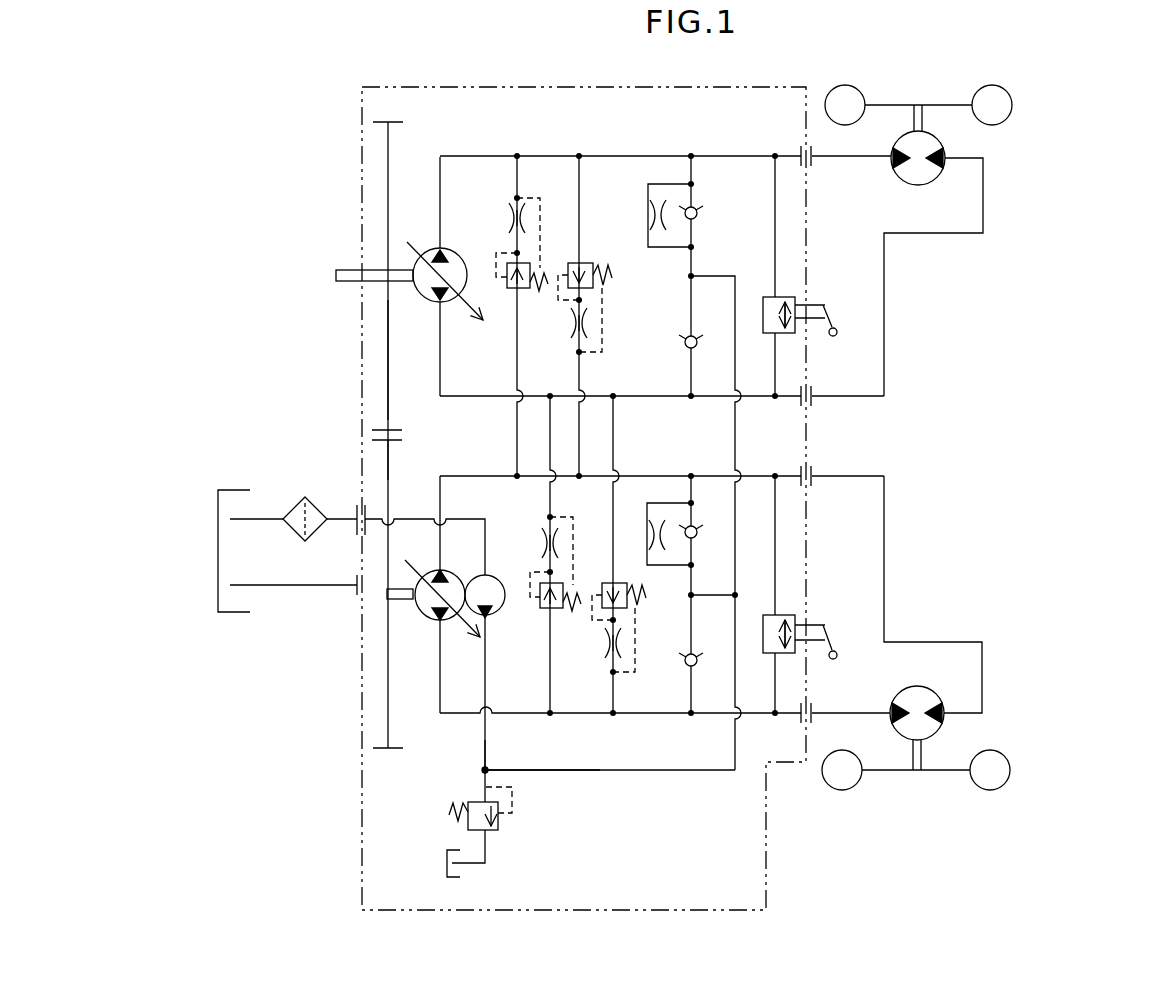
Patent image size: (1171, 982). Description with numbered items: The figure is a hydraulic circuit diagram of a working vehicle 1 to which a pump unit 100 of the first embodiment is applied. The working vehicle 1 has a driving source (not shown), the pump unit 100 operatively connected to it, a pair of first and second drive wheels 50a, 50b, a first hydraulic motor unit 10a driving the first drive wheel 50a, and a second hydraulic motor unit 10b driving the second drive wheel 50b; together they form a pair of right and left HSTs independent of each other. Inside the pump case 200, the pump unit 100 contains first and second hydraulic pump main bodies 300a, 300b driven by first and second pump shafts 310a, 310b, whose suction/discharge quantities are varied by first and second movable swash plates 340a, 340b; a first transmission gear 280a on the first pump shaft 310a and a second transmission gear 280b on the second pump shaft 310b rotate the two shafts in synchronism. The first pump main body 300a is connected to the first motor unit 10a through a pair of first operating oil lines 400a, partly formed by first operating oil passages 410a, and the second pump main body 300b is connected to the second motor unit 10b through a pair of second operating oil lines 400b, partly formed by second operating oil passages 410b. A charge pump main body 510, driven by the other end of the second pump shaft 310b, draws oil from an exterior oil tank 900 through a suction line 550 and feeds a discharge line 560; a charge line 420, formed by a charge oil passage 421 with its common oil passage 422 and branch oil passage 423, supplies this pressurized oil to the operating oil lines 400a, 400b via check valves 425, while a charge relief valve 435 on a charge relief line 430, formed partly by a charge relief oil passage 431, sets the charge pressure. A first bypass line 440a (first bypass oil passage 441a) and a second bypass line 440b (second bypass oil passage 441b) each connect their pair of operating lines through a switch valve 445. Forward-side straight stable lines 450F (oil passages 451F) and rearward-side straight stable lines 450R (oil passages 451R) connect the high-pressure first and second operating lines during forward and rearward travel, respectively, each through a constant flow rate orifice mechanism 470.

The working vehicle 1 is at (1090, 263).
The pump unit 100 is at (290, 195).
The pump case 200 is at (362, 146).
The first transmission gear 280a is at (388, 327).
The second transmission gear 280b is at (388, 460).
The first hydraulic pump main body 300a is at (402, 254).
The second hydraulic pump main body 300b is at (434, 623).
The first pump shaft 310a is at (353, 272).
The second pump shaft 310b is at (400, 600).
The first movable swash plate 340a is at (465, 303).
The second movable swash plate 340b is at (407, 560).
The exterior oil tank 900 is at (222, 500).
The suction line 550 is at (487, 548).
The charge pump main body 510 is at (502, 620).
The discharge line 560 is at (484, 750).
The charge relief valve 435 is at (503, 830).
The charge relief line 430 is at (524, 866).
The charge relief oil passage 431 is at (487, 847).
The constant flow rate orifice mechanism 470 is at (497, 238).
The forward-side straight stable lines 450F is at (587, 293).
The forward-side straight stable oil passages 451F is at (520, 176).
The rearward-side straight stable lines 450R is at (588, 580).
The rearward-side straight stable oil passages 451R is at (612, 693).
The first operating oil passages 410a is at (727, 156).
The second operating oil passages 410b is at (660, 476).
The first operating oil lines 400a is at (850, 158).
The second operating oil lines 400b is at (884, 580).
The branch oil passage 423 is at (693, 260).
The check valves 425 is at (703, 222).
The common oil passage 422 is at (735, 648).
The charge line 420 is at (621, 795).
The charge oil passage 421 is at (672, 773).
The first bypass line 440a is at (865, 276).
The first bypass oil passage 441a is at (776, 247).
The second bypass line 440b is at (866, 594).
The second bypass oil passage 441b is at (776, 533).
The switch valve 445 is at (802, 300).
The first hydraulic motor unit 10a is at (940, 139).
The second hydraulic motor unit 10b is at (935, 752).
The first drive wheel 50a is at (880, 105).
The second drive wheel 50b is at (885, 772).